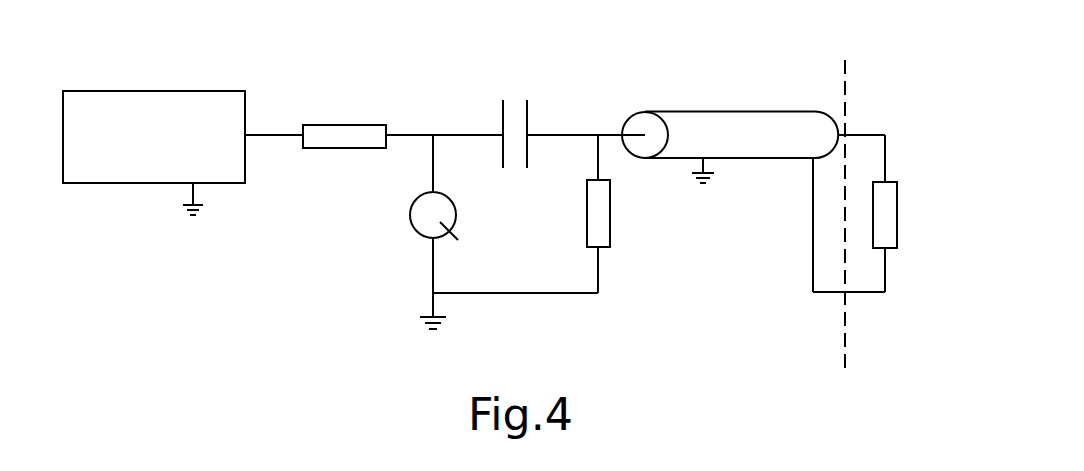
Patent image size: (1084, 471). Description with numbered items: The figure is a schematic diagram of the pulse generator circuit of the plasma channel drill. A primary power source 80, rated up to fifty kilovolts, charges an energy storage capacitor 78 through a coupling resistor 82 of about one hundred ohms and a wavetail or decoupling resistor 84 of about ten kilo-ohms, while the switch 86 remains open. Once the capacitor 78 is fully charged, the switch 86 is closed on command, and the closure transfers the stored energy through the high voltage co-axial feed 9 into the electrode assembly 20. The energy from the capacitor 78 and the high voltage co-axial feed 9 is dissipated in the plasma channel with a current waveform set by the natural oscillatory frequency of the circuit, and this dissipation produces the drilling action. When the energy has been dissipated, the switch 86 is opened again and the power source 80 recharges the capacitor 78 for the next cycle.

The primary power source 80 is at (247, 97).
The coupling resistor 82 is at (347, 125).
The energy storage capacitor 78 is at (503, 110).
The switch 86 is at (412, 228).
The wavetail or decoupling resistor 84 is at (610, 237).
The high voltage co-axial feed 9 is at (735, 112).
The electrode assembly 20 is at (897, 185).